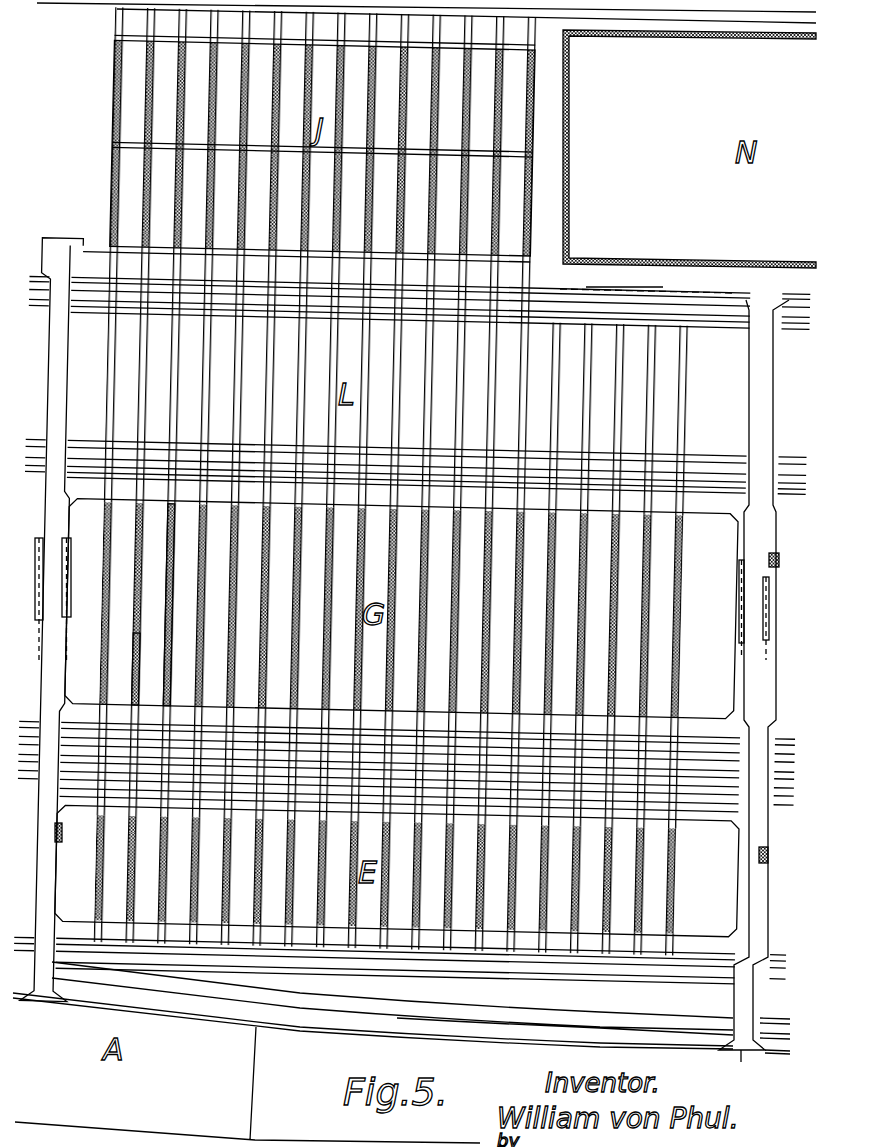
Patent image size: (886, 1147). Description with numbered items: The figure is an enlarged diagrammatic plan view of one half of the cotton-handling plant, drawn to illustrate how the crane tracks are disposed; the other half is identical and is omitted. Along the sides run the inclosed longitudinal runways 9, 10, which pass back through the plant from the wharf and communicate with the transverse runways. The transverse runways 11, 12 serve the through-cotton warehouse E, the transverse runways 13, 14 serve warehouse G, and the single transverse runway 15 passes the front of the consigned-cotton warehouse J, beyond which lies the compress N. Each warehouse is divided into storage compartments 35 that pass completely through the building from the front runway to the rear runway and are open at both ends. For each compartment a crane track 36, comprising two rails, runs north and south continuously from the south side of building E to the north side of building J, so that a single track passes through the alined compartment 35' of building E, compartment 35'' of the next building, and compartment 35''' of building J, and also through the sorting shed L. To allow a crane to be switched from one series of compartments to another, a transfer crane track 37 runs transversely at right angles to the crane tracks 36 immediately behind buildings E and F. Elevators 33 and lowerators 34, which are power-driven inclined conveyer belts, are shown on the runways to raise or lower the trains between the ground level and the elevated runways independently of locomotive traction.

The longitudinal runway 9 is at (759, 395).
The longitudinal runway 10 is at (60, 390).
The transverse runway 11 is at (683, 943).
The transverse runway 12 is at (678, 828).
The transverse runway 13 is at (686, 727).
The transverse runway 14 is at (711, 503).
The transverse runway 15 is at (719, 283).
The elevator 33 is at (739, 597).
The lowerator 34 is at (773, 597).
The storage compartment 35 is at (409, 610).
The compartment of building E 35' is at (385, 874).
The compartment of building F 35'' is at (187, 605).
The compartment of building J 35''' is at (298, 148).
The crane track 36 is at (193, 670).
The transfer crane track 37 is at (113, 805).